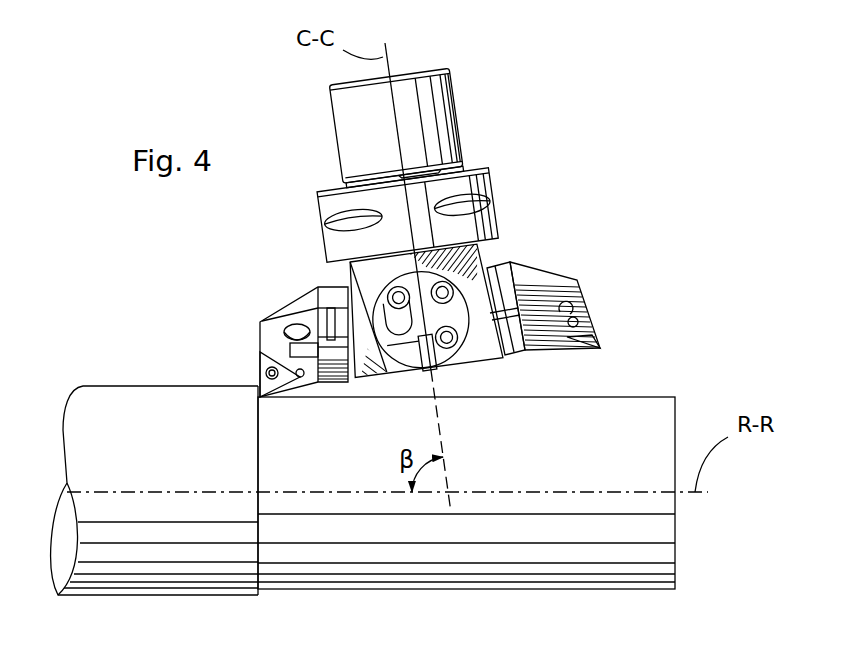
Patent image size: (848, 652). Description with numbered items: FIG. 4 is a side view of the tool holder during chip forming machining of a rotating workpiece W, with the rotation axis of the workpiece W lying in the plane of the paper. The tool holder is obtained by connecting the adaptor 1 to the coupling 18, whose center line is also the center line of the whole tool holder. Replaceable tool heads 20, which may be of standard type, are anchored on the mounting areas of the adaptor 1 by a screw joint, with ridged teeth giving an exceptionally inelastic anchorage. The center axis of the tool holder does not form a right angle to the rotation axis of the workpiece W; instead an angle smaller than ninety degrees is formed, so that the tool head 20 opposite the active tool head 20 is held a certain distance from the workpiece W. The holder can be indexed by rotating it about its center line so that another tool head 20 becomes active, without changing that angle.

The adaptor 1 is at (482, 252).
The coupling 18 is at (480, 153).
The replaceable tool head 20 is at (290, 302).
The workpiece W is at (653, 393).